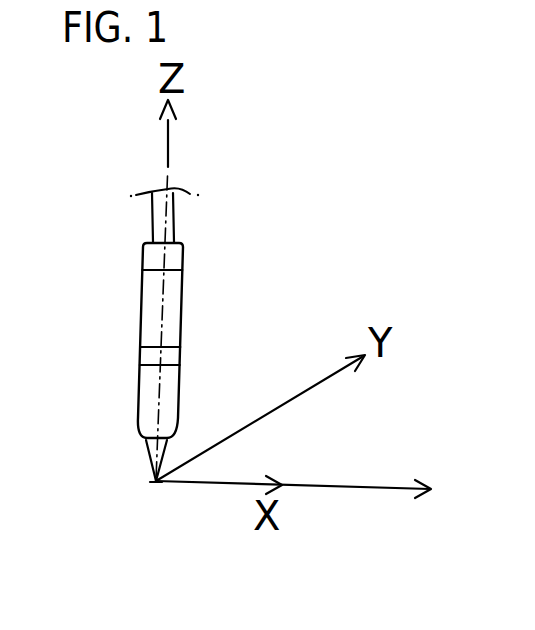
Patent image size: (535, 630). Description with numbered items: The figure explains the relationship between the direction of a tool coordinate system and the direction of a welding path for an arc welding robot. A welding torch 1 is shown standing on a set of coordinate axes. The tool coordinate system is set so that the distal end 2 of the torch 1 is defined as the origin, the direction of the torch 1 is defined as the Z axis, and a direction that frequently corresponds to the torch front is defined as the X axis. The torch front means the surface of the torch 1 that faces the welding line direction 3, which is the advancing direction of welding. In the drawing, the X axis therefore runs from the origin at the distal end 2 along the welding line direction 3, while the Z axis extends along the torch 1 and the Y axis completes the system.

The welding torch 1 is at (197, 300).
The distal end 2 is at (150, 483).
The welding line direction 3 is at (360, 489).